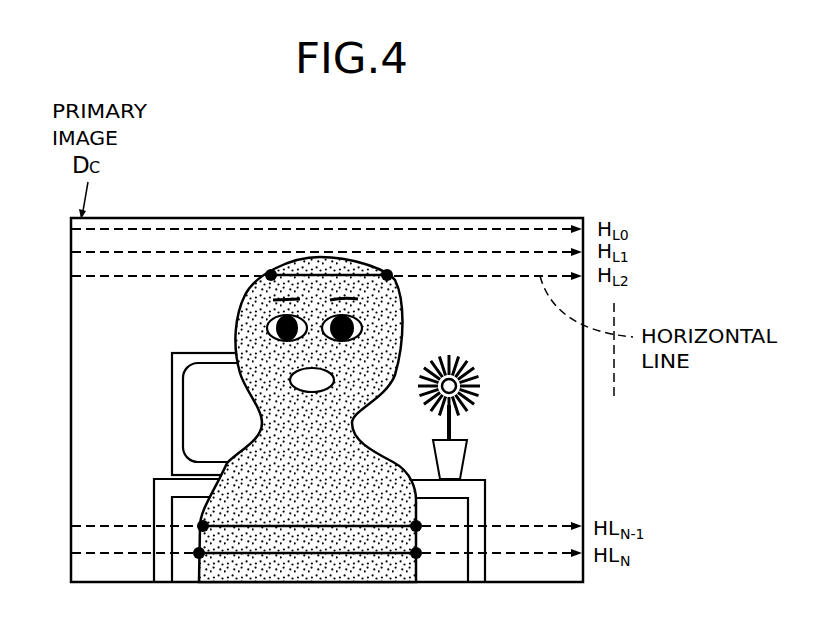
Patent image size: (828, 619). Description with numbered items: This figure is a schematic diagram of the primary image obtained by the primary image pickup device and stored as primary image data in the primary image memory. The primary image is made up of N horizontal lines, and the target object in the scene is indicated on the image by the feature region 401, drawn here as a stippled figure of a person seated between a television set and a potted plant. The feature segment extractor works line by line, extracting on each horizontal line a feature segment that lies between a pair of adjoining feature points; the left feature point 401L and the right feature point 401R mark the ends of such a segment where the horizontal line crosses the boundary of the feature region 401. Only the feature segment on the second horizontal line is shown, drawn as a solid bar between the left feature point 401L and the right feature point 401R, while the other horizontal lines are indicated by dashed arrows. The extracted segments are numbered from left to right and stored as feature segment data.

The feature region 401 is at (339, 248).
The left feature point 401L is at (271, 275).
The right feature point 401R is at (387, 275).